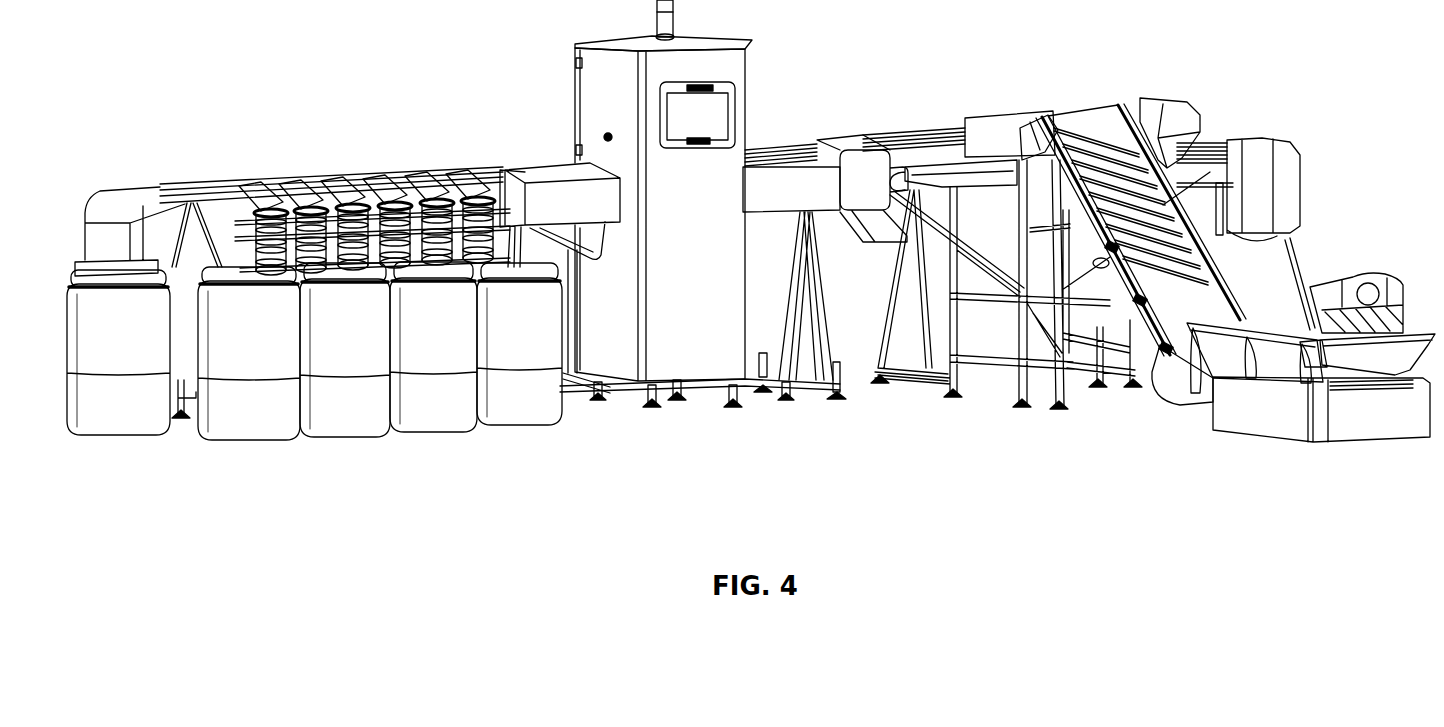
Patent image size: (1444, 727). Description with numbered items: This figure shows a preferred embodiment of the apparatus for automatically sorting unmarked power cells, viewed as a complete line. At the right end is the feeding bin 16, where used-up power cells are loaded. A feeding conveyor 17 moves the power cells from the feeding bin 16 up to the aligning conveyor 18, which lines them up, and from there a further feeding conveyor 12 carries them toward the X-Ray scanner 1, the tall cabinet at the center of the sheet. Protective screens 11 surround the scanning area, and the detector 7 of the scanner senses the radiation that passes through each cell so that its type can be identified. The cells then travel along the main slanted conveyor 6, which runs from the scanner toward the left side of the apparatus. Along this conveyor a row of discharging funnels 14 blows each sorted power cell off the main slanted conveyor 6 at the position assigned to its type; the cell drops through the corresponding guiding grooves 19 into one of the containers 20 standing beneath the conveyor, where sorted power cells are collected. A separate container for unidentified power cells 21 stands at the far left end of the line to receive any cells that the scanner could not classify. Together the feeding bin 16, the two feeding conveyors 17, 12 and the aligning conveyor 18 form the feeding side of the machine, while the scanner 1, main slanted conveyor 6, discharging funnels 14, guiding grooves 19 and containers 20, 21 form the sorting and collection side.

The X-Ray scanner 1 is at (610, 195).
The main slanted conveyor 6 is at (802, 185).
The detector 7 is at (265, 178).
The protective screens 11 is at (847, 147).
The feeding conveyor 12 is at (942, 135).
The discharging funnels 14 is at (343, 187).
The feeding bin 16 is at (1345, 275).
The feeding conveyor 17 is at (1222, 147).
The aligning conveyor 18 is at (1183, 150).
The guiding grooves 19 is at (363, 183).
The containers 20 is at (527, 302).
The container for unidentified power cells 21 is at (108, 305).